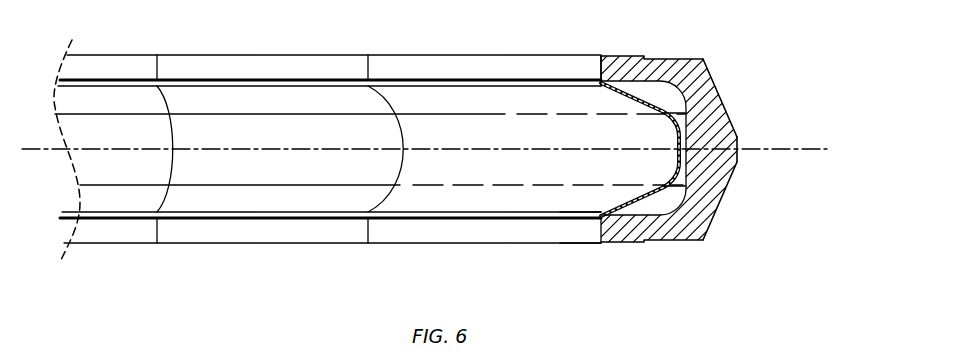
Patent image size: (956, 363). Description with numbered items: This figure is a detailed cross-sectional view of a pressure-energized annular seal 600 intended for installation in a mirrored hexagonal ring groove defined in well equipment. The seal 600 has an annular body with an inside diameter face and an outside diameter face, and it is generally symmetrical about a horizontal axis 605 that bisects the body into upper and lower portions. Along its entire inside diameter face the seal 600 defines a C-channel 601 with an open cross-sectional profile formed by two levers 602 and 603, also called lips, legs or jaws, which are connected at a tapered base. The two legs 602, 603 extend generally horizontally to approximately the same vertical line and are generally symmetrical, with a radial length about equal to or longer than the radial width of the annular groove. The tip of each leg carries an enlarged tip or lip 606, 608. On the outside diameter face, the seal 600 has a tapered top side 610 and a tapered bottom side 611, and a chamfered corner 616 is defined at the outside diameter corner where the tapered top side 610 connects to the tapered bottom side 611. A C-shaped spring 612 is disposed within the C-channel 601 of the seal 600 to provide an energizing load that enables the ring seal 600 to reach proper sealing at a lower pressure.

The pressure-energized annular seal 600 is at (686, 73).
The C-channel 601 is at (600, 120).
The lever 602 is at (600, 66).
The lever 603 is at (598, 228).
The horizontal axis 605 is at (298, 148).
The enlarged tip or lip 606 is at (615, 62).
The enlarged tip or lip 608 is at (615, 243).
The tapered top side 610 is at (733, 102).
The tapered bottom side 611 is at (732, 213).
The C-shaped spring 612 is at (640, 195).
The chamfered corner 616 is at (737, 150).